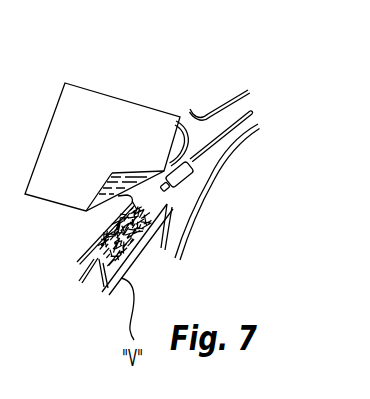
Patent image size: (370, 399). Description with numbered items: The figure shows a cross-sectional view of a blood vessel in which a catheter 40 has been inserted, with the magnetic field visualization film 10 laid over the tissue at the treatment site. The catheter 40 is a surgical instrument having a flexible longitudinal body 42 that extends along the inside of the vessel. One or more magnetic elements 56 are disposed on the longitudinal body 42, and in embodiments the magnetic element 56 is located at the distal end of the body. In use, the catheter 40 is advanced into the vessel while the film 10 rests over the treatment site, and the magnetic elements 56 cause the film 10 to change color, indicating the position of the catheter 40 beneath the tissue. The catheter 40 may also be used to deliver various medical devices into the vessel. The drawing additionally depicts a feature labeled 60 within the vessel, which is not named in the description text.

The magnetic field visualization film 10 is at (107, 113).
The catheter 40 is at (258, 125).
The longitudinal body 42 is at (212, 141).
The magnetic element 56 is at (188, 184).
The occlusion (thrombus) 60 is at (100, 240).